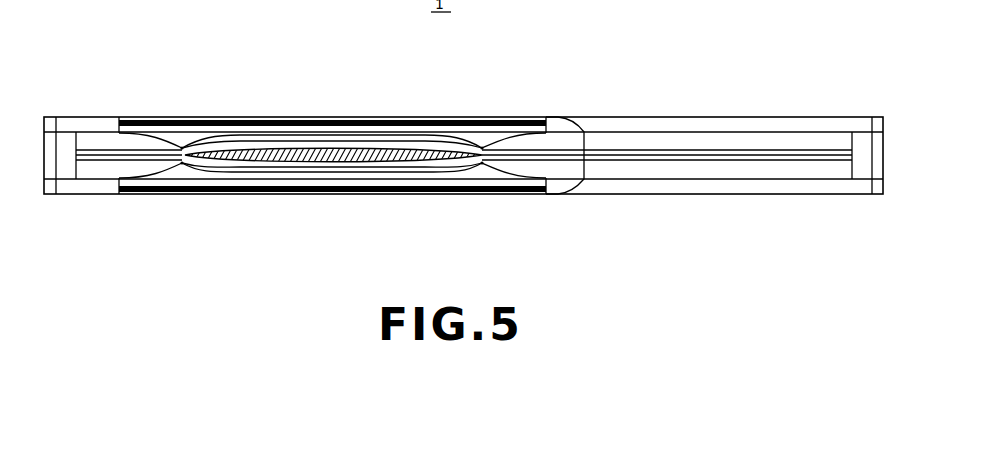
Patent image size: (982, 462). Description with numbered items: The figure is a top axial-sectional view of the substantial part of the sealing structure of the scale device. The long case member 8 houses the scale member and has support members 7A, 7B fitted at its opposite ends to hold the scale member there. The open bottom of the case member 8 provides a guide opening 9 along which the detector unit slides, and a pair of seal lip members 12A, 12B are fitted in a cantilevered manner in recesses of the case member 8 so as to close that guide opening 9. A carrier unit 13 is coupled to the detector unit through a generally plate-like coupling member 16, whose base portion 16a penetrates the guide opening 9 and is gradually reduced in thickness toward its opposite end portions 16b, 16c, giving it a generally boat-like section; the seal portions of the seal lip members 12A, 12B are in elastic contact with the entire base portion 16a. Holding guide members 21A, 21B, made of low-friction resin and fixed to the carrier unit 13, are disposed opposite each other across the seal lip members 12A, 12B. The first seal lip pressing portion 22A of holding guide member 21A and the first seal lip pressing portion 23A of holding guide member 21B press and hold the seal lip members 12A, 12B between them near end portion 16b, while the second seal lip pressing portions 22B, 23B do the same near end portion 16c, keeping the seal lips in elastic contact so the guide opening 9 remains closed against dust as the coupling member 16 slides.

The support member 7A is at (50, 163).
The support member 7B is at (862, 160).
The case member 8 is at (686, 118).
The guide opening 9 is at (647, 134).
The seal lip member 12A is at (744, 150).
The seal lip member 12B is at (744, 160).
The carrier unit 13 is at (586, 194).
The coupling member 16 is at (336, 156).
The base portion 16a is at (312, 150).
The end portion 16b is at (200, 143).
The end portion 16c is at (470, 147).
The holding guide member 21A is at (387, 133).
The holding guide member 21B is at (336, 173).
The first seal lip pressing portion 22A is at (181, 147).
The second seal lip pressing portion 22B is at (484, 147).
The first seal lip pressing portion 23A is at (183, 164).
The second seal lip pressing portion 23B is at (482, 164).